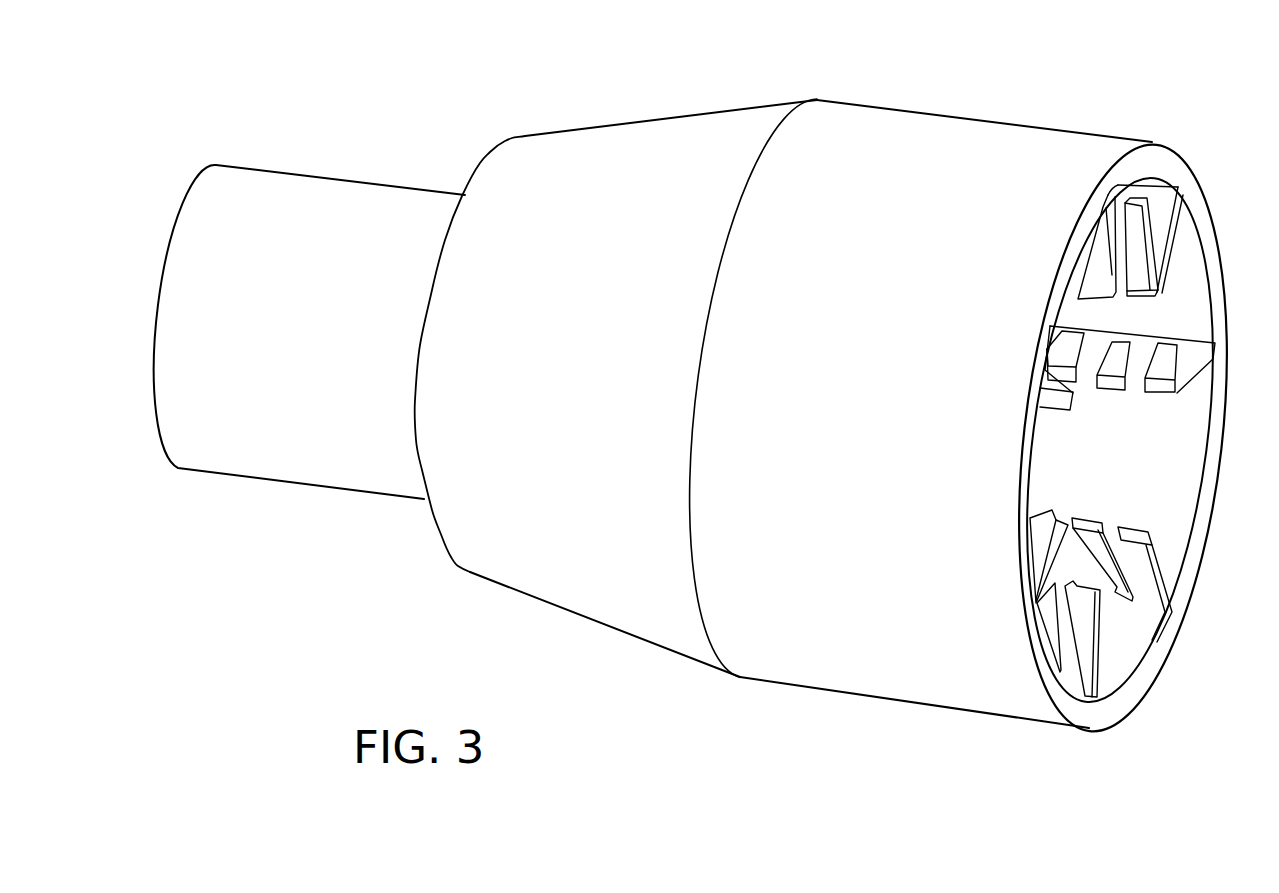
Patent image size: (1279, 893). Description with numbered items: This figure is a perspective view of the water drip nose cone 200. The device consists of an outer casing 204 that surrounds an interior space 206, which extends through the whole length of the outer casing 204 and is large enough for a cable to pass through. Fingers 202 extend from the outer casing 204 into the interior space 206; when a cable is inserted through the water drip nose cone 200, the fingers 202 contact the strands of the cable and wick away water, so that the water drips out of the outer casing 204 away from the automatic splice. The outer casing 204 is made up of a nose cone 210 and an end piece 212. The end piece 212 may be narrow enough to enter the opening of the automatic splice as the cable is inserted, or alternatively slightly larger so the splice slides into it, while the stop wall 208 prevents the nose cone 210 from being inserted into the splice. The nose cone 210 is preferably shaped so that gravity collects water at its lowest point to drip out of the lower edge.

The water drip nose cone 200 is at (707, 411).
The fingers 202 is at (1085, 628).
The outer casing 204 is at (1181, 166).
The interior space 206 is at (1148, 470).
The stop wall 208 is at (482, 163).
The nose cone 210 is at (1125, 113).
The end piece 212 is at (421, 530).